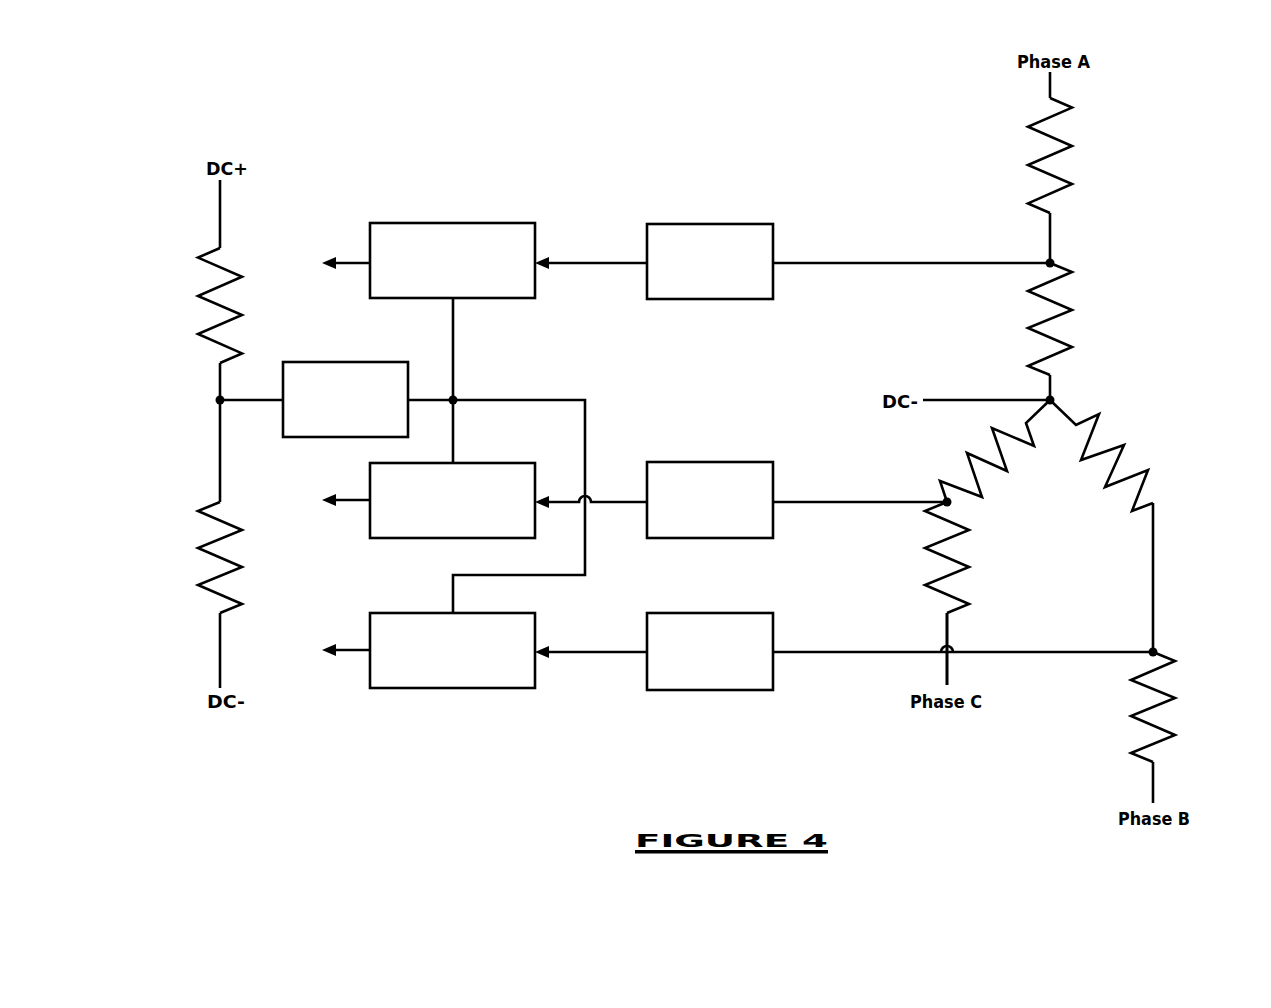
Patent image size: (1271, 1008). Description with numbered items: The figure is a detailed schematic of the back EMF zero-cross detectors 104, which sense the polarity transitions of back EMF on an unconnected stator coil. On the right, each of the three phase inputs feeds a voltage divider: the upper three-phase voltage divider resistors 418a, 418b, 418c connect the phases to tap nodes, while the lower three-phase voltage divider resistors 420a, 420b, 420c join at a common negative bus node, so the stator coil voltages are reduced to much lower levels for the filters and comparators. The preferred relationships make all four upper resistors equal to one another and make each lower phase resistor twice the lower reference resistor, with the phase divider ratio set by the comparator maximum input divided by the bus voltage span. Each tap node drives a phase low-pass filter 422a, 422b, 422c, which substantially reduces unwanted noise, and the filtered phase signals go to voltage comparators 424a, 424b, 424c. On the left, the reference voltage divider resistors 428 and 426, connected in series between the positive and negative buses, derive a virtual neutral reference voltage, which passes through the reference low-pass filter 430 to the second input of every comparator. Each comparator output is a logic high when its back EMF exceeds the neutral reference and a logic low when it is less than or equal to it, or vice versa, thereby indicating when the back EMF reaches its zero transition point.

The back EMF zero-cross detectors 104 is at (826, 740).
The three-phase voltage divider resistor Raa 418a is at (1072, 145).
The three-phase voltage divider resistor Rbb 418b is at (1138, 720).
The three-phase voltage divider resistor Rcc 418c is at (968, 568).
The three-phase voltage divider resistor Ra 420a is at (1070, 305).
The three-phase voltage divider resistor Rb 420b is at (1097, 417).
The three-phase voltage divider resistor Rc 420c is at (1007, 471).
The phase low-pass filter A 422a is at (752, 223).
The phase low-pass filter B 422b is at (752, 613).
The phase low-pass filter C 422c is at (757, 462).
The voltage comparator A 424a is at (493, 223).
The voltage comparator B 424b is at (492, 688).
The voltage comparator C 424c is at (500, 463).
The reference voltage divider resistor Rr 426 is at (235, 603).
The reference voltage divider resistor Rrr 428 is at (225, 267).
The reference low-pass filter 430 is at (362, 362).